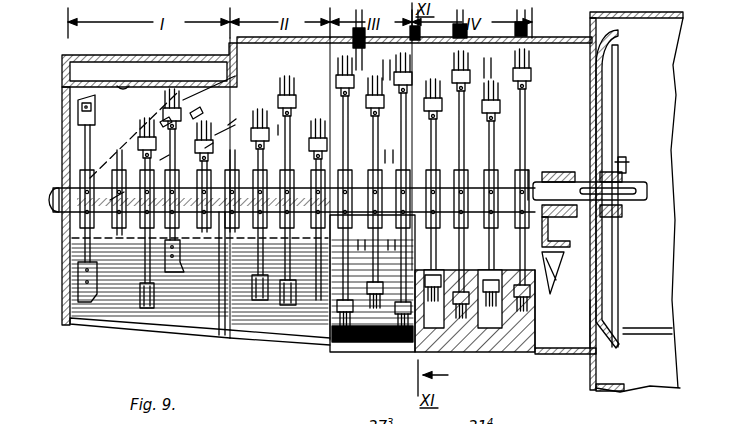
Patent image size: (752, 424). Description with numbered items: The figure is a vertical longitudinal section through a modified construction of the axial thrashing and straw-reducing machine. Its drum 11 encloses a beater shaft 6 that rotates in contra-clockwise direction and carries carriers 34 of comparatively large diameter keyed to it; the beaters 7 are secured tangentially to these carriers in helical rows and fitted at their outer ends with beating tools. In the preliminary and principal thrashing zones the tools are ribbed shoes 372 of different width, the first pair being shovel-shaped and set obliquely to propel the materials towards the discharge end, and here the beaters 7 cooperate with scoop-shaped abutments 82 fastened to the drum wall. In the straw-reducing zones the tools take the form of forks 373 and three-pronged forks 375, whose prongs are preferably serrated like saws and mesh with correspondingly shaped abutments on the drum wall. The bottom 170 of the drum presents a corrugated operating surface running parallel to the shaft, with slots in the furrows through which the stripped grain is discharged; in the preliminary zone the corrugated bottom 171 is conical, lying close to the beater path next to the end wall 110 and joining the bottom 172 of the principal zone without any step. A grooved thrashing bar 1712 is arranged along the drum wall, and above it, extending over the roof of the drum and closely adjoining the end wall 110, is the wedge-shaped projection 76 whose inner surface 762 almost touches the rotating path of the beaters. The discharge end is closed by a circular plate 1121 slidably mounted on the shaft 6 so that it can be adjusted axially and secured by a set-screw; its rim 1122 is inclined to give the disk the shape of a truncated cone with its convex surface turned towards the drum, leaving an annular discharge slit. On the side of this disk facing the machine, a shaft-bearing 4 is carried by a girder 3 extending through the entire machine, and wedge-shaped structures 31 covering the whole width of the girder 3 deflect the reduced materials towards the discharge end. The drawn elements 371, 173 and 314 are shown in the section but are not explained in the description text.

The drum 11 is at (686, 41).
The rim 1122 is at (619, 33).
The circular plate 1121 is at (605, 100).
The wedge-shaped projection 76 is at (210, 75).
The inner surface 762 is at (122, 85).
The beater shaft 6 is at (55, 194).
The grooved thrashing bar 1712 is at (62, 210).
The carriers 34 is at (533, 171).
The shaft-bearing 4 is at (560, 175).
The girder 3 is at (556, 237).
The wedge-shaped structures 31 is at (561, 276).
The beaters 7 is at (288, 115).
The ribbed shoes 372 is at (140, 142).
The bracket tool 371 is at (79, 112).
The scoop-shaped abutments 82 is at (200, 112).
The end wall 110 is at (69, 272).
The corrugated bottom 171 is at (100, 320).
The bottom 170 is at (207, 332).
The bottom 172 is at (256, 334).
The trough box 173 is at (354, 355).
The forks 373 is at (396, 347).
The block 314 is at (460, 343).
The forks 375 is at (500, 343).